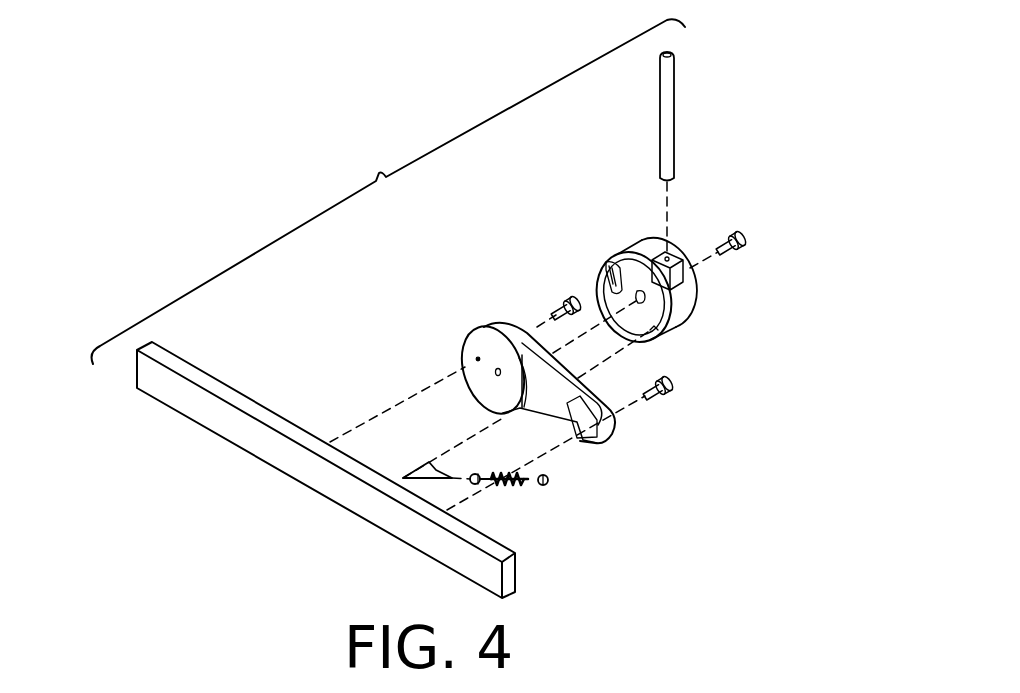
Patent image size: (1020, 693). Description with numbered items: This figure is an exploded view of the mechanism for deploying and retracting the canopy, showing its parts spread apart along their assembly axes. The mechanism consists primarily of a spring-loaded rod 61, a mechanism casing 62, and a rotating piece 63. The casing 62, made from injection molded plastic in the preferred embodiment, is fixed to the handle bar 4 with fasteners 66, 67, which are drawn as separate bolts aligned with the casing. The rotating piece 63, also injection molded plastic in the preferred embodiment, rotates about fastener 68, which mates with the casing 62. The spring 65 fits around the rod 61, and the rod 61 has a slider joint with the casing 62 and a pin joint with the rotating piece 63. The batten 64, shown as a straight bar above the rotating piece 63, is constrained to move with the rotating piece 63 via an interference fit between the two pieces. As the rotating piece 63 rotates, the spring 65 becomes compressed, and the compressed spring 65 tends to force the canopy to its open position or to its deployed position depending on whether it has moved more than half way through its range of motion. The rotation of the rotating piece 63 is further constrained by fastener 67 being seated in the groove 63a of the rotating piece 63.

The handle bar 4 is at (182, 402).
The spring-loaded rod 61 is at (410, 462).
The mechanism casing 62 is at (478, 317).
The rotating piece 63 is at (623, 243).
The groove 63a is at (604, 262).
The batten 64 is at (677, 117).
The spring 65 is at (515, 493).
The fastener 66 is at (680, 380).
The fastener 67 is at (567, 302).
The fastener 68 is at (748, 232).